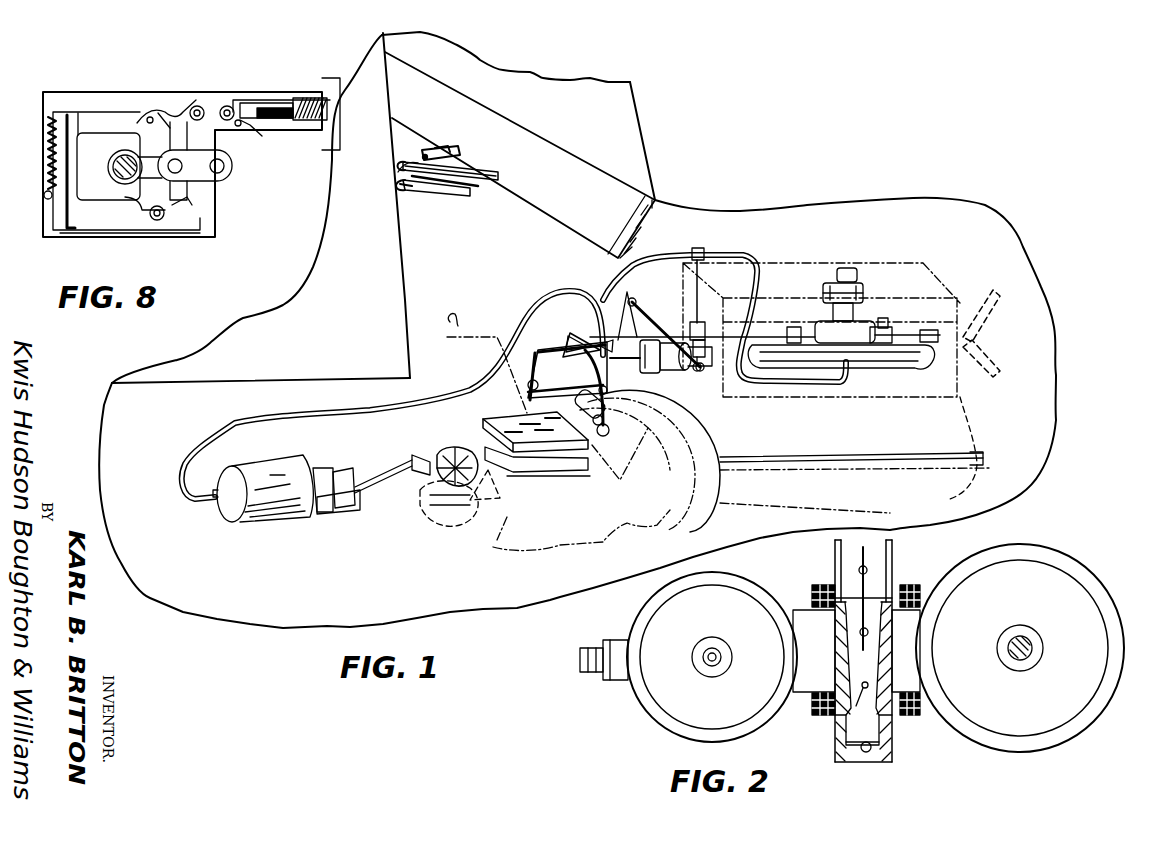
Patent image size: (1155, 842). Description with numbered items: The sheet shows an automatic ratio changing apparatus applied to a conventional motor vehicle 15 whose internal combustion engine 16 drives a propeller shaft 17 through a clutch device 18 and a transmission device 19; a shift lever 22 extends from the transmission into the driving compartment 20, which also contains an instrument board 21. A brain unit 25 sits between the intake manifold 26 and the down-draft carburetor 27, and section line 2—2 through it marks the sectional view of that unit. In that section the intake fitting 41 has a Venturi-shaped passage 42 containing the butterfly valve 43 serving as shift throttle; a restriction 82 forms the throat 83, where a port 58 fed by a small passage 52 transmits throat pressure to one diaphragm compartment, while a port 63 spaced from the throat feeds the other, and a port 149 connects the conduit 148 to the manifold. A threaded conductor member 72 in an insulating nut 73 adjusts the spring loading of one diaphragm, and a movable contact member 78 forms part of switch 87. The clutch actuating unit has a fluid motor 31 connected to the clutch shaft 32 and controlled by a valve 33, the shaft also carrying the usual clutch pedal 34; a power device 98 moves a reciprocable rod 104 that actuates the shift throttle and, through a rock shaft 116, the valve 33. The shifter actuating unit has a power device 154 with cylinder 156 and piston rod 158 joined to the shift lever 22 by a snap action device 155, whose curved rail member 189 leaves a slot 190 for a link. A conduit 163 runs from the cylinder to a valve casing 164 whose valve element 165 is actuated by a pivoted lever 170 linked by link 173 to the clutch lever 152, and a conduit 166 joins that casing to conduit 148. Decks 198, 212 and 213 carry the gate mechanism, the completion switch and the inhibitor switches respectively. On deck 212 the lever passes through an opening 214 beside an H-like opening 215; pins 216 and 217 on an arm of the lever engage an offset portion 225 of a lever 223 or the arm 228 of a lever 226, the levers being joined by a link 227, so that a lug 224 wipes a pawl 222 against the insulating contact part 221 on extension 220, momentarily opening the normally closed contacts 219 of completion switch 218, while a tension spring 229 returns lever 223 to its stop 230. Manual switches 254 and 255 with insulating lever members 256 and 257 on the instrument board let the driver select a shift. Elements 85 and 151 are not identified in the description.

In FIG. 1, the motor vehicle 15 is at (805, 210).
In FIG. 1, the internal combustion engine 16 is at (930, 280).
In FIG. 1, the propeller shaft 17 is at (448, 512).
In FIG. 1, the clutch device 18 is at (697, 520).
In FIG. 1, the transmission device 19 is at (530, 538).
In FIG. 1, the driving compartment 20 is at (410, 248).
In FIG. 1, the instrument board 21 is at (560, 212).
In FIG. 8, the shift lever 22 is at (112, 178).
In FIG. 1, the shift lever 22 is at (470, 337).
In FIG. 1, the brain unit 25 is at (870, 322).
In FIG. 2, the brain unit 25 is at (740, 585).
In FIG. 1, the intake manifold 26 is at (885, 362).
In FIG. 2, the intake manifold 26 is at (835, 750).
In FIG. 1, the carburetor 27 is at (850, 266).
In FIG. 2, the carburetor 27 is at (893, 568).
In FIG. 1, the fluid motor 31 is at (696, 368).
In FIG. 1, the clutch shaft 32 is at (650, 373).
In FIG. 1, the valve 33 is at (690, 318).
In FIG. 1, the clutch pedal 34 is at (582, 372).
In FIG. 2, the intake fitting 41 is at (800, 700).
In FIG. 2, the intake passage 42 is at (905, 628).
In FIG. 2, the butterfly valve 43 is at (898, 590).
In FIG. 1, the passage 52 is at (606, 418).
In FIG. 2, the port 58 is at (859, 639).
In FIG. 2, the port 63 is at (828, 588).
In FIG. 2, the electrical conductor member 72 is at (583, 665).
In FIG. 2, the nut 73 is at (618, 678).
In FIG. 2, the movable contact member 78 is at (700, 665).
In FIG. 2, the restriction 82 is at (900, 672).
In FIG. 2, the throat 83 is at (900, 650).
In FIG. 1, the shaft 85 is at (383, 466).
In FIG. 1, the switch 87 is at (890, 367).
In FIG. 2, the power device 98 is at (1058, 580).
In FIG. 1, the reciprocable rod 104 is at (810, 330).
In FIG. 2, the reciprocable rod 104 is at (1028, 658).
In FIG. 1, the rock shaft 116 is at (697, 315).
In FIG. 1, the conduit 148 is at (735, 253).
In FIG. 2, the port 149 is at (892, 748).
In FIG. 1, the link 151 is at (626, 347).
In FIG. 1, the clutch lever 152 is at (635, 395).
In FIG. 1, the power device 154 is at (295, 512).
In FIG. 1, the snap action device 155 is at (462, 448).
In FIG. 1, the cylinder 156 is at (302, 462).
In FIG. 1, the piston rod 158 is at (393, 470).
In FIG. 1, the conduit 163 is at (395, 408).
In FIG. 1, the valve casing 164 is at (578, 330).
In FIG. 1, the valve element 165 is at (565, 345).
In FIG. 1, the conduit 166 is at (612, 285).
In FIG. 1, the pivoted lever 170 is at (548, 352).
In FIG. 1, the link 173 is at (565, 385).
In FIG. 1, the rail-like member 189 is at (430, 460).
In FIG. 1, the slot 190 is at (428, 500).
In FIG. 1, the deck 198 is at (548, 480).
In FIG. 8, the deck 212 is at (102, 100).
In FIG. 1, the deck 212 is at (562, 470).
In FIG. 1, the deck 213 is at (608, 438).
In FIG. 8, the opening 214 is at (83, 108).
In FIG. 8, the H-like opening 215 is at (187, 196).
In FIG. 8, the pin 216 is at (190, 185).
In FIG. 8, the pin 217 is at (228, 170).
In FIG. 8, the completion switch 218 is at (306, 98).
In FIG. 8, the contacts 219 is at (275, 102).
In FIG. 8, the extension 220 is at (245, 118).
In FIG. 8, the contact part 221 is at (258, 134).
In FIG. 8, the swinging pawl 222 is at (230, 108).
In FIG. 8, the lever 223 is at (165, 110).
In FIG. 8, the lug 224 is at (220, 108).
In FIG. 8, the offset portion 225 is at (172, 112).
In FIG. 8, the lever 226 is at (100, 233).
In FIG. 8, the link 227 is at (66, 213).
In FIG. 8, the arm 228 is at (157, 221).
In FIG. 8, the tension spring 229 is at (50, 128).
In FIG. 8, the stop 230 is at (150, 116).
In FIG. 1, the manually operable switch 254 is at (452, 150).
In FIG. 1, the manually operable switch 255 is at (468, 192).
In FIG. 1, the lever-like member 256 is at (447, 146).
In FIG. 1, the lever-like member 257 is at (486, 179).
In FIG. 1, the section line 2 is at (858, 394).